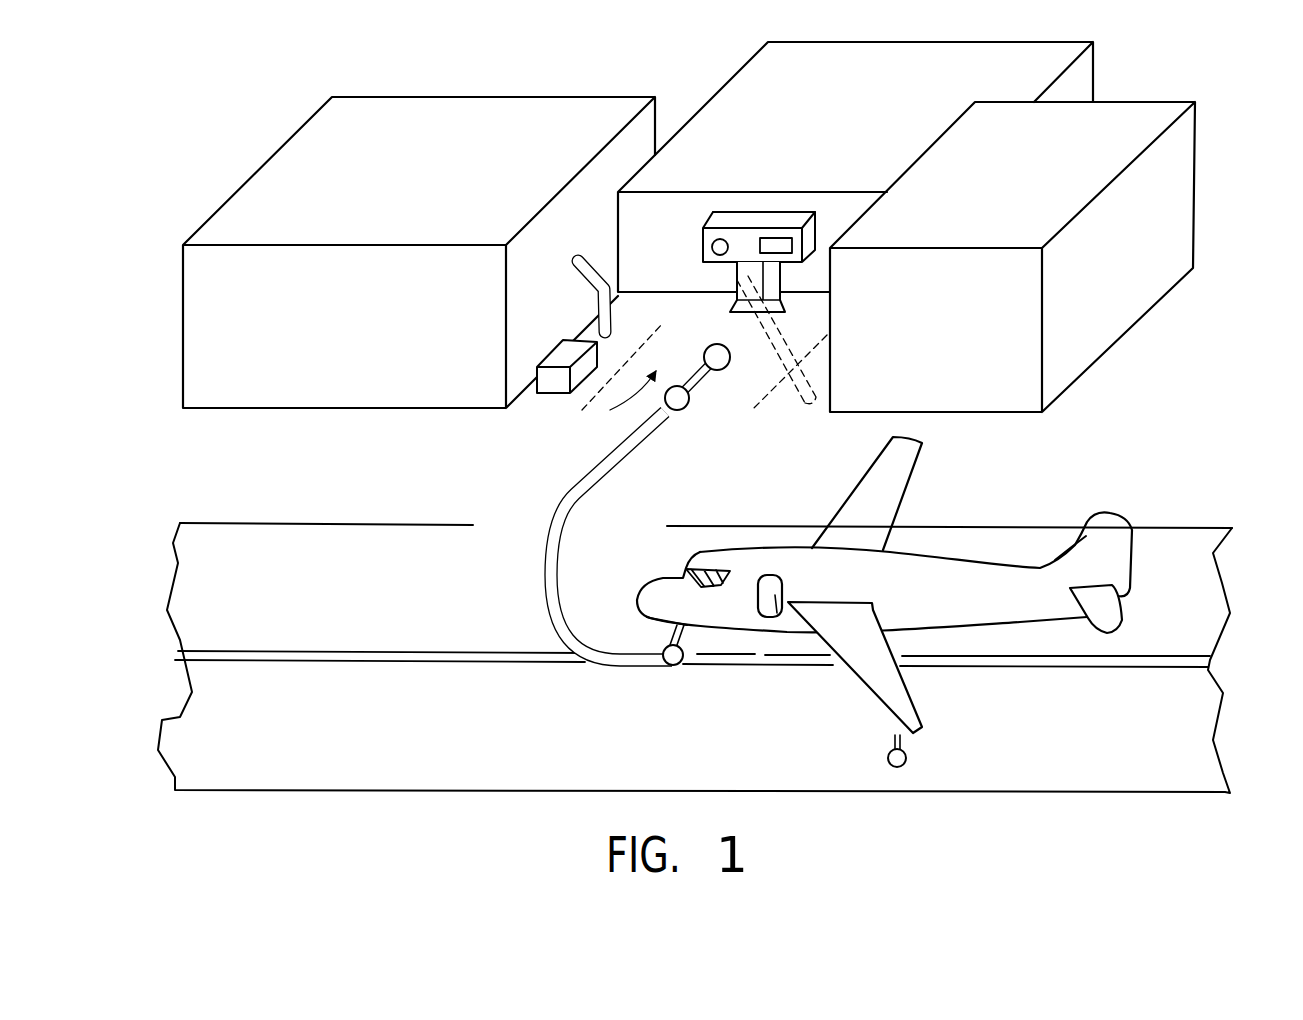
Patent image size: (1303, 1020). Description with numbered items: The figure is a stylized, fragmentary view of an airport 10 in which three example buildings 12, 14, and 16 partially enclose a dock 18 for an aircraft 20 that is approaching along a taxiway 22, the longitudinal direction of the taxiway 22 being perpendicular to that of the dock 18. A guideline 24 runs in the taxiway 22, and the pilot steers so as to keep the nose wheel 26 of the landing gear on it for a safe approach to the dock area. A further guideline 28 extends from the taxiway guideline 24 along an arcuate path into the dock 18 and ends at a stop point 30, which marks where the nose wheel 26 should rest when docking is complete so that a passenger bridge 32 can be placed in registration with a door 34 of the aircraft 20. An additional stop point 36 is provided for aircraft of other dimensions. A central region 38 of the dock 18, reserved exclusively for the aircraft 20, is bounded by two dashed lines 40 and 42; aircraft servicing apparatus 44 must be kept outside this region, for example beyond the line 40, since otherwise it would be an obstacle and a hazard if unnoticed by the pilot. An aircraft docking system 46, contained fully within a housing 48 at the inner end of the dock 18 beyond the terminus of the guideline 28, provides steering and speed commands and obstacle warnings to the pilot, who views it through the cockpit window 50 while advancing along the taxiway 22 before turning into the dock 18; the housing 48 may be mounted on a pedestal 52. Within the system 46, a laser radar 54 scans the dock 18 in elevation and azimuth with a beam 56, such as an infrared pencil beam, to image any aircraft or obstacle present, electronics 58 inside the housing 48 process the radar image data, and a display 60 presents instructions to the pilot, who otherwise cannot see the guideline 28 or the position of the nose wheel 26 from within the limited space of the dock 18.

The airport 10 is at (476, 74).
The building 12 is at (232, 190).
The building 14 is at (728, 80).
The building 16 is at (1122, 100).
The dock 18 is at (583, 444).
The aircraft 20 is at (1120, 512).
The taxiway 22 is at (1227, 687).
The guideline 24 is at (990, 667).
The nose wheel 26 is at (682, 667).
The further guideline 28 is at (545, 537).
The stop point 30 is at (729, 356).
The passenger bridge 32 is at (577, 288).
The door 34 is at (777, 613).
The stop point 36 is at (683, 410).
The central region 38 is at (621, 405).
The dashed line 40 is at (645, 356).
The dashed line 42 is at (768, 395).
The aircraft servicing apparatus 44 is at (552, 395).
The aircraft docking system 46 is at (698, 237).
The housing 48 is at (714, 213).
The cockpit window 50 is at (693, 558).
The pedestal 52 is at (780, 293).
The laser radar 54 is at (715, 263).
The beam 56 is at (803, 413).
The electronics 58 is at (730, 212).
The display 60 is at (782, 258).